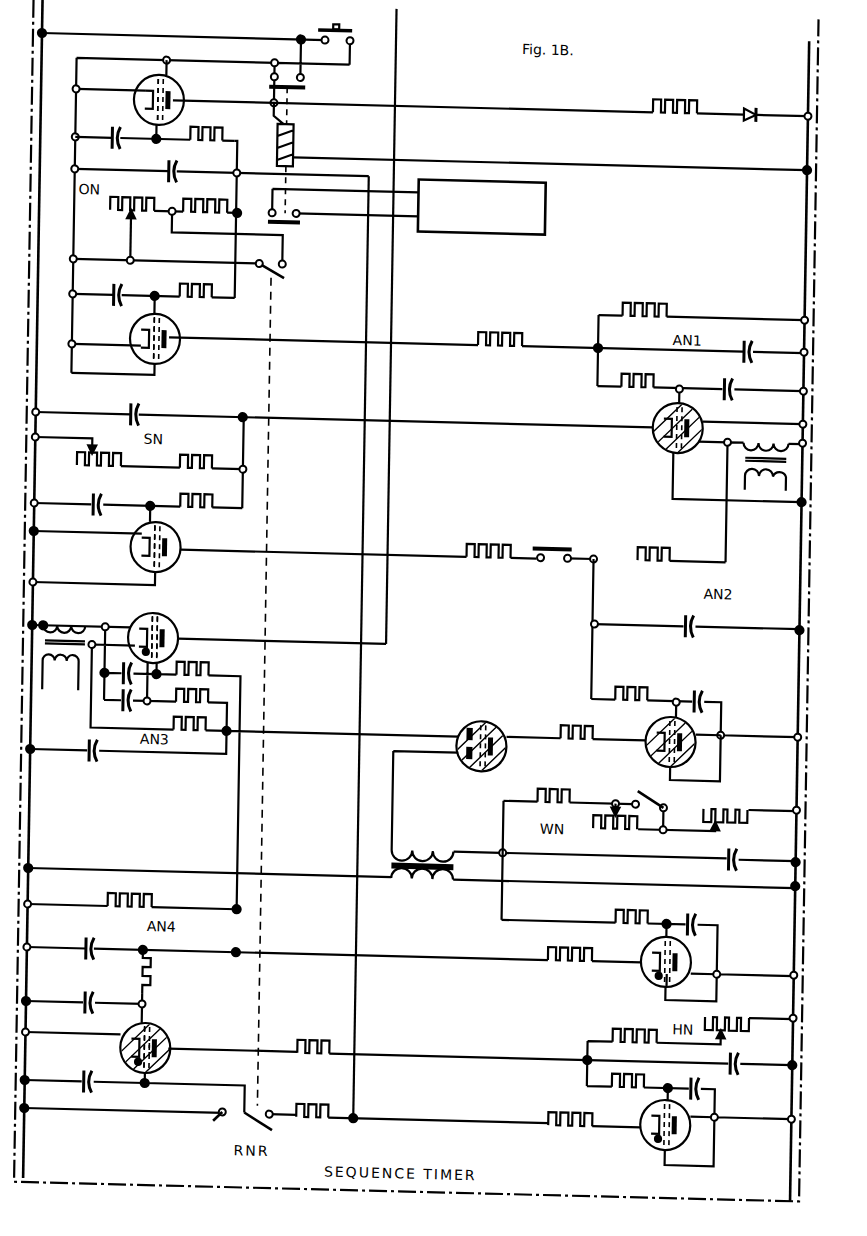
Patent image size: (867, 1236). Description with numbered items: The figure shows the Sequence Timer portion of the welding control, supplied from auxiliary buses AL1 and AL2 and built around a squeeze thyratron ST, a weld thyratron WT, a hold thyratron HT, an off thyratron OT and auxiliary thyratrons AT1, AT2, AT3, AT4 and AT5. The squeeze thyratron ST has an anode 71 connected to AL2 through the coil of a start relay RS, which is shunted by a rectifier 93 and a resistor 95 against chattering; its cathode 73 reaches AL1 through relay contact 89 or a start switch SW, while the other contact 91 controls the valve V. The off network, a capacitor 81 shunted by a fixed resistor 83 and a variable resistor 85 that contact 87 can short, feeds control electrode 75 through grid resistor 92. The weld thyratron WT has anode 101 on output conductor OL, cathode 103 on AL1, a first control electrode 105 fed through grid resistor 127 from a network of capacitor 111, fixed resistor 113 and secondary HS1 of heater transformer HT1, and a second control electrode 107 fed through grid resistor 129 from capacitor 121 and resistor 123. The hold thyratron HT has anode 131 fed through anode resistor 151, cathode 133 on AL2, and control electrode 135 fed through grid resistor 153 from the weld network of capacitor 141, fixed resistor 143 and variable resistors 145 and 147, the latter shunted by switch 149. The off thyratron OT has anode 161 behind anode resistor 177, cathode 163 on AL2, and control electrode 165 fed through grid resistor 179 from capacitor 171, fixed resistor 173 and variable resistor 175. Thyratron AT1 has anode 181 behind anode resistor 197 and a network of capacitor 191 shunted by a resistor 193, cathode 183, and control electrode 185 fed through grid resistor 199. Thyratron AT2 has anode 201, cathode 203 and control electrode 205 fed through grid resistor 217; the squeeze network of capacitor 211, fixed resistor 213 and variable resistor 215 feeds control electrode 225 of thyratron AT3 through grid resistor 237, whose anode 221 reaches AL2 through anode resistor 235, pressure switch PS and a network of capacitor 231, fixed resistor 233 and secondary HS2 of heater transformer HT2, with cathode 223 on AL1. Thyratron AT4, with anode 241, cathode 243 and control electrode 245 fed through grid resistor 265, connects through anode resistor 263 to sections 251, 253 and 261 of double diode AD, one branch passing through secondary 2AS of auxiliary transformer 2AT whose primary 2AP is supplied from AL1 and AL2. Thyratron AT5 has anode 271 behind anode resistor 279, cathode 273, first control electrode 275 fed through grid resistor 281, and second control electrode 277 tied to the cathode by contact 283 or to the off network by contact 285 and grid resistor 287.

The anode 71 is at (178, 108).
The cathode 73 is at (147, 88).
The control electrode 75 is at (142, 105).
The capacitor 81 is at (181, 165).
The fixed resistor 83 is at (203, 199).
The variable resistor 85 is at (118, 210).
The contact 87 is at (292, 270).
The normally open contact 89 is at (308, 84).
The normally open contact 91 is at (304, 218).
The grid resistor 92 is at (226, 131).
The rectifier 93 is at (755, 90).
The resistor 95 is at (684, 92).
The anode 101 is at (183, 643).
The cathode 103 is at (148, 617).
The first control electrode 105 is at (161, 612).
The second control electrode 107 is at (175, 615).
The capacitor 111 is at (110, 752).
The fixed resistor 113 is at (185, 721).
The capacitor 121 is at (89, 938).
The resistor 123 is at (168, 901).
The grid resistor 127 is at (220, 697).
The grid resistor 129 is at (222, 670).
The anode 131 is at (658, 953).
The cathode 133 is at (702, 948).
The control electrode 135 is at (692, 966).
The capacitor 141 is at (744, 851).
The fixed resistor 143 is at (581, 788).
The variable resistor 145 is at (740, 791).
The variable resistor 147 is at (656, 827).
The switch 149 is at (672, 785).
The anode resistor 151 is at (588, 940).
The grid resistor 153 is at (664, 900).
The anode 161 is at (658, 1116).
The cathode 163 is at (707, 1115).
The control electrode 165 is at (705, 1096).
The capacitor 171 is at (760, 1054).
The fixed resistor 173 is at (640, 1012).
The variable resistor 175 is at (740, 999).
The anode resistor 177 is at (586, 1119).
The grid resistor 179 is at (662, 1071).
The anode 181 is at (186, 345).
The cathode 183 is at (140, 342).
The control electrode 185 is at (140, 330).
The capacitor 191 is at (757, 329).
The resistor 193 is at (644, 300).
The anode resistor 197 is at (500, 330).
The grid resistor 199 is at (193, 292).
The anode 201 is at (658, 420).
The cathode 203 is at (700, 430).
The control electrode 205 is at (712, 397).
The capacitor 211 is at (147, 411).
The fixed resistor 213 is at (200, 452).
The variable resistor 215 is at (84, 466).
The grid resistor 217 is at (640, 371).
The anode 221 is at (182, 551).
The cathode 223 is at (144, 547).
The control electrode 225 is at (142, 529).
The capacitor 231 is at (692, 608).
The fixed resistor 233 is at (646, 544).
The anode resistor 235 is at (500, 545).
The grid resistor 237 is at (198, 492).
The anode 241 is at (662, 736).
The cathode 243 is at (705, 735).
The control electrode 245 is at (705, 718).
The anode section 251 is at (473, 722).
The cathode section 253 is at (520, 740).
The anode section 261 is at (468, 751).
The anode resistor 263 is at (600, 713).
The grid resistor 265 is at (644, 685).
The anode 271 is at (177, 1040).
The cathode 273 is at (140, 1046).
The first control electrode 275 is at (167, 1026).
The second control electrode 277 is at (182, 1059).
The anode resistor 279 is at (314, 1032).
The grid resistor 281 is at (158, 969).
The contact 283 is at (252, 1105).
The contact 285 is at (267, 1121).
The grid resistor 287 is at (314, 1097).
The squeeze thyratron ST is at (186, 89).
The auxiliary thyratron AT1 is at (190, 330).
The auxiliary thyratron AT2 is at (662, 398).
The auxiliary thyratron AT3 is at (182, 534).
The auxiliary thyratron AT4 is at (662, 711).
The auxiliary thyratron AT5 is at (186, 1026).
The double diode AD is at (501, 711).
The weld thyratron WT is at (185, 618).
The hold thyratron HT is at (664, 936).
The off thyratron OT is at (700, 1130).
The start switch SW is at (353, 22).
The start relay RS is at (297, 133).
The valve V is at (547, 222).
The back pressure switch PS is at (575, 538).
The output conductor OL is at (397, 33).
The auxiliary conductor AL1 is at (46, 27).
The auxiliary conductor AL2 is at (806, 33).
The heater transformer HT1 is at (73, 644).
The secondary winding HS1 is at (63, 615).
The heater transformer HT2 is at (762, 438).
The secondary winding HS2 is at (772, 457).
The secondary 2AS is at (422, 845).
The auxiliary transformer 2AT is at (470, 857).
The primary 2AP is at (422, 885).